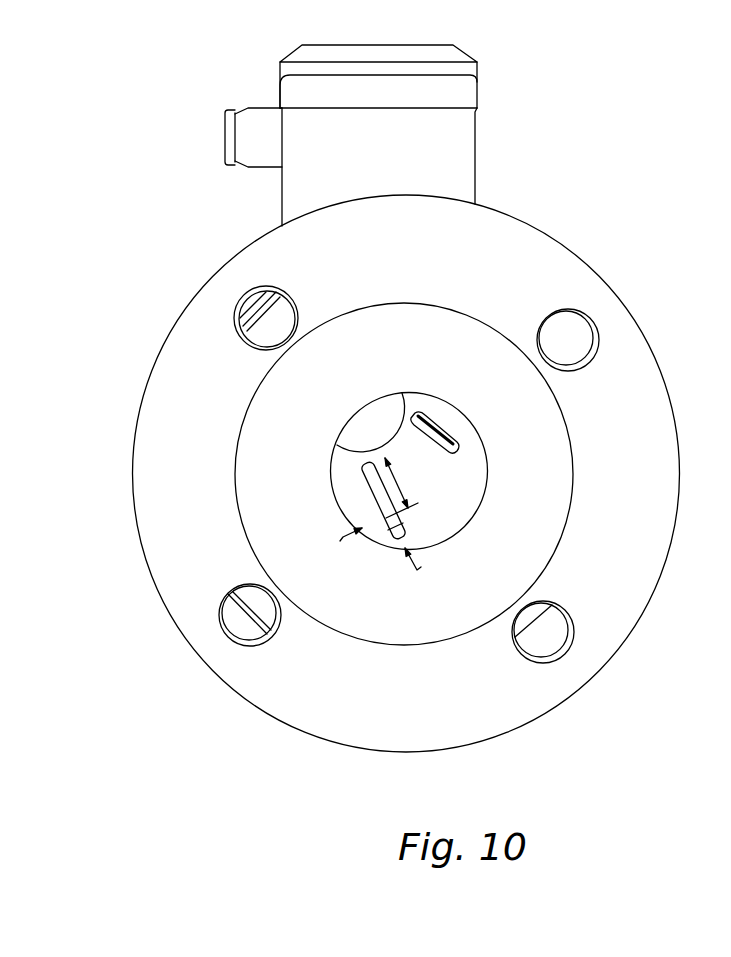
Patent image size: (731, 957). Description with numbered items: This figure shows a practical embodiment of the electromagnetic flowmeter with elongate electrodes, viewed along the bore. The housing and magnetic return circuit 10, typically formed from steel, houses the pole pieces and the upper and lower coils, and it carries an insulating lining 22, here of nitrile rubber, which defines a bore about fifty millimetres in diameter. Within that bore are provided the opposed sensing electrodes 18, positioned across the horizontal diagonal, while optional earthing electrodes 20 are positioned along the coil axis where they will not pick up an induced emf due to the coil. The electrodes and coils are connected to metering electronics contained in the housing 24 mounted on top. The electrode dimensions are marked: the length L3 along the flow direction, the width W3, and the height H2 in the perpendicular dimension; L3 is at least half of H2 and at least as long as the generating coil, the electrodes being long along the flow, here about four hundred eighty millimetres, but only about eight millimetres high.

The housing and magnetic return circuit 10 is at (203, 572).
The sensing electrodes 18 is at (452, 437).
The earthing electrodes 20 is at (365, 498).
The insulating lining 22 is at (513, 558).
The housing for metering electronics 24 is at (476, 160).
The electrode length L3 is at (400, 483).
The electrode height H2 is at (347, 552).
The electrode width W3 is at (404, 570).